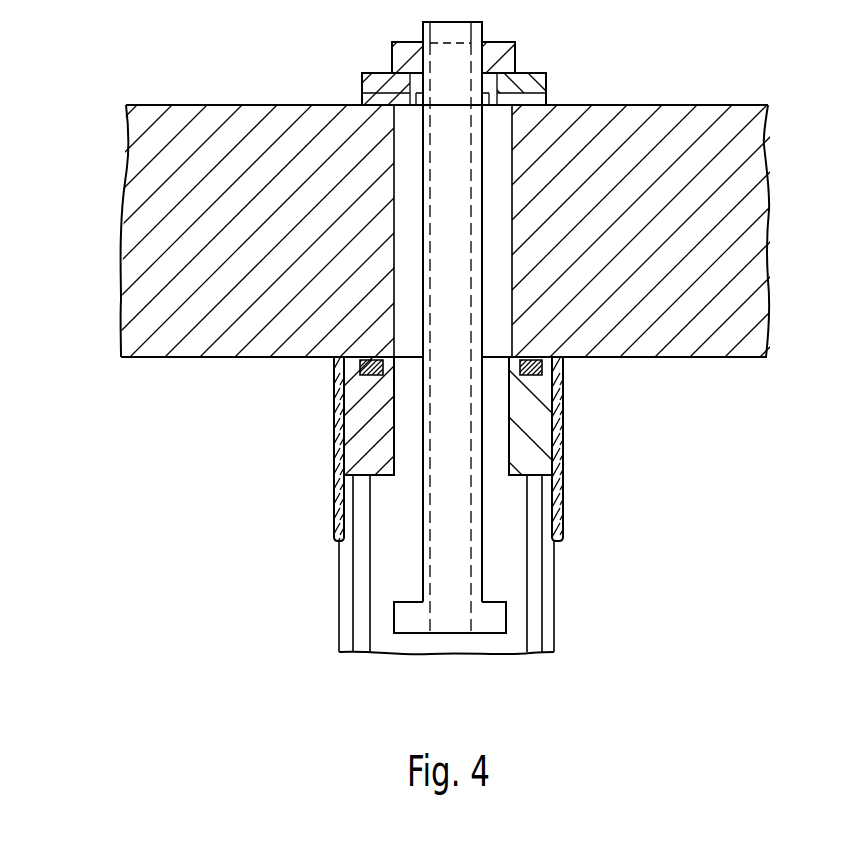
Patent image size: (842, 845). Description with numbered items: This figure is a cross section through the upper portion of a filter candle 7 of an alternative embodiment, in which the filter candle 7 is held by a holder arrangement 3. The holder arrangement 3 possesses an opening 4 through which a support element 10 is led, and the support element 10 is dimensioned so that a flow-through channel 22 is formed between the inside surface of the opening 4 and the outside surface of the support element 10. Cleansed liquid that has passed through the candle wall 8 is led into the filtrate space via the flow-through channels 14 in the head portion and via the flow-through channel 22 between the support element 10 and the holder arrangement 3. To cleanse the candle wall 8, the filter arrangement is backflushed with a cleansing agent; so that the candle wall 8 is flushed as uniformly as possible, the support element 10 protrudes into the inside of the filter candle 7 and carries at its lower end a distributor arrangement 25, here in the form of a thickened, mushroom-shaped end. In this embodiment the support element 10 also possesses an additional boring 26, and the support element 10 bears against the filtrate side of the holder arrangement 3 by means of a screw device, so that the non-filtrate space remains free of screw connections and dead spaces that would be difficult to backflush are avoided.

The holder arrangement 3 is at (160, 222).
The opening 4 is at (497, 318).
The filter candle 7 is at (570, 583).
The candle wall 8 is at (548, 632).
The support element 10 is at (440, 213).
The flow-through channels 14 is at (410, 455).
The flow-through channel 22 is at (410, 147).
The distributor arrangement 25 is at (440, 622).
The additional boring 26 is at (438, 533).